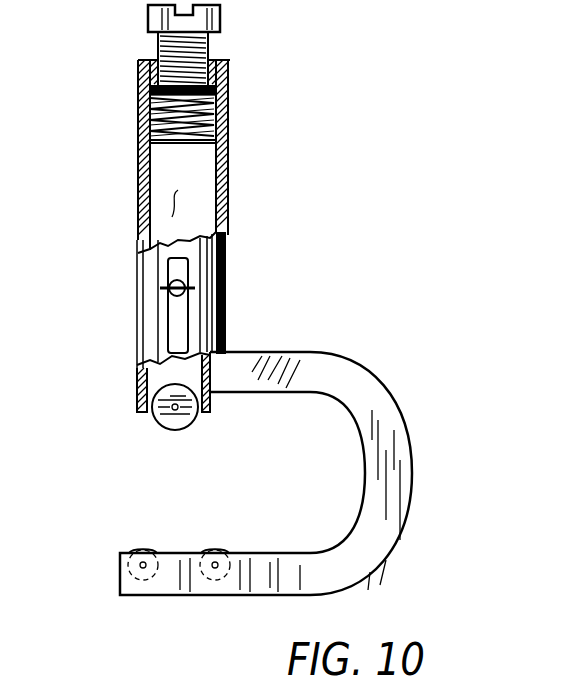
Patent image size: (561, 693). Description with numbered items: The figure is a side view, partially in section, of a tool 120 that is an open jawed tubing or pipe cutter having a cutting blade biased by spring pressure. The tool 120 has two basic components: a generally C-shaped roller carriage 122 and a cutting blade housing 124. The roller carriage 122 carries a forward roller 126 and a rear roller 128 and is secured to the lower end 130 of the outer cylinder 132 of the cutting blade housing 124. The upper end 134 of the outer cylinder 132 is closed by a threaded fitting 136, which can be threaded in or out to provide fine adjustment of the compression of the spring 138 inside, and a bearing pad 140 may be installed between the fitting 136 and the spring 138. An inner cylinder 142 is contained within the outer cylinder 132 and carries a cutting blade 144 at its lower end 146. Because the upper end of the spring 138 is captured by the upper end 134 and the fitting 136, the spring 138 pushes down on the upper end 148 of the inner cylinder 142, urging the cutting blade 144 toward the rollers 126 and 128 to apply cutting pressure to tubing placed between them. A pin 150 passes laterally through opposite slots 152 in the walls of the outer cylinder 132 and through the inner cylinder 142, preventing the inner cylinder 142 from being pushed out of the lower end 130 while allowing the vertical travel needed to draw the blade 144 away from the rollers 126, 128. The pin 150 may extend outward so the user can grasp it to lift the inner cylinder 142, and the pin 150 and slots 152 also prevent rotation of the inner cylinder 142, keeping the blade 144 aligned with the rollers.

The tool 120 is at (270, 260).
The roller carriage 122 is at (360, 572).
The cutting blade housing 124 is at (228, 185).
The forward roller 126 is at (152, 548).
The rear roller 128 is at (222, 548).
The lower end of outer cylinder 130 is at (136, 381).
The outer cylinder 132 is at (226, 305).
The upper end of outer cylinder 134 is at (229, 78).
The threaded fitting 136 is at (157, 50).
The spring 138 is at (140, 122).
The bearing pad 140 is at (138, 92).
The inner cylinder 142 is at (172, 207).
The cutting blade 144 is at (192, 424).
The lower end of inner cylinder 146 is at (138, 398).
The upper end of inner cylinder 148 is at (232, 152).
The pin 150 is at (163, 281).
The slots 152 is at (168, 322).